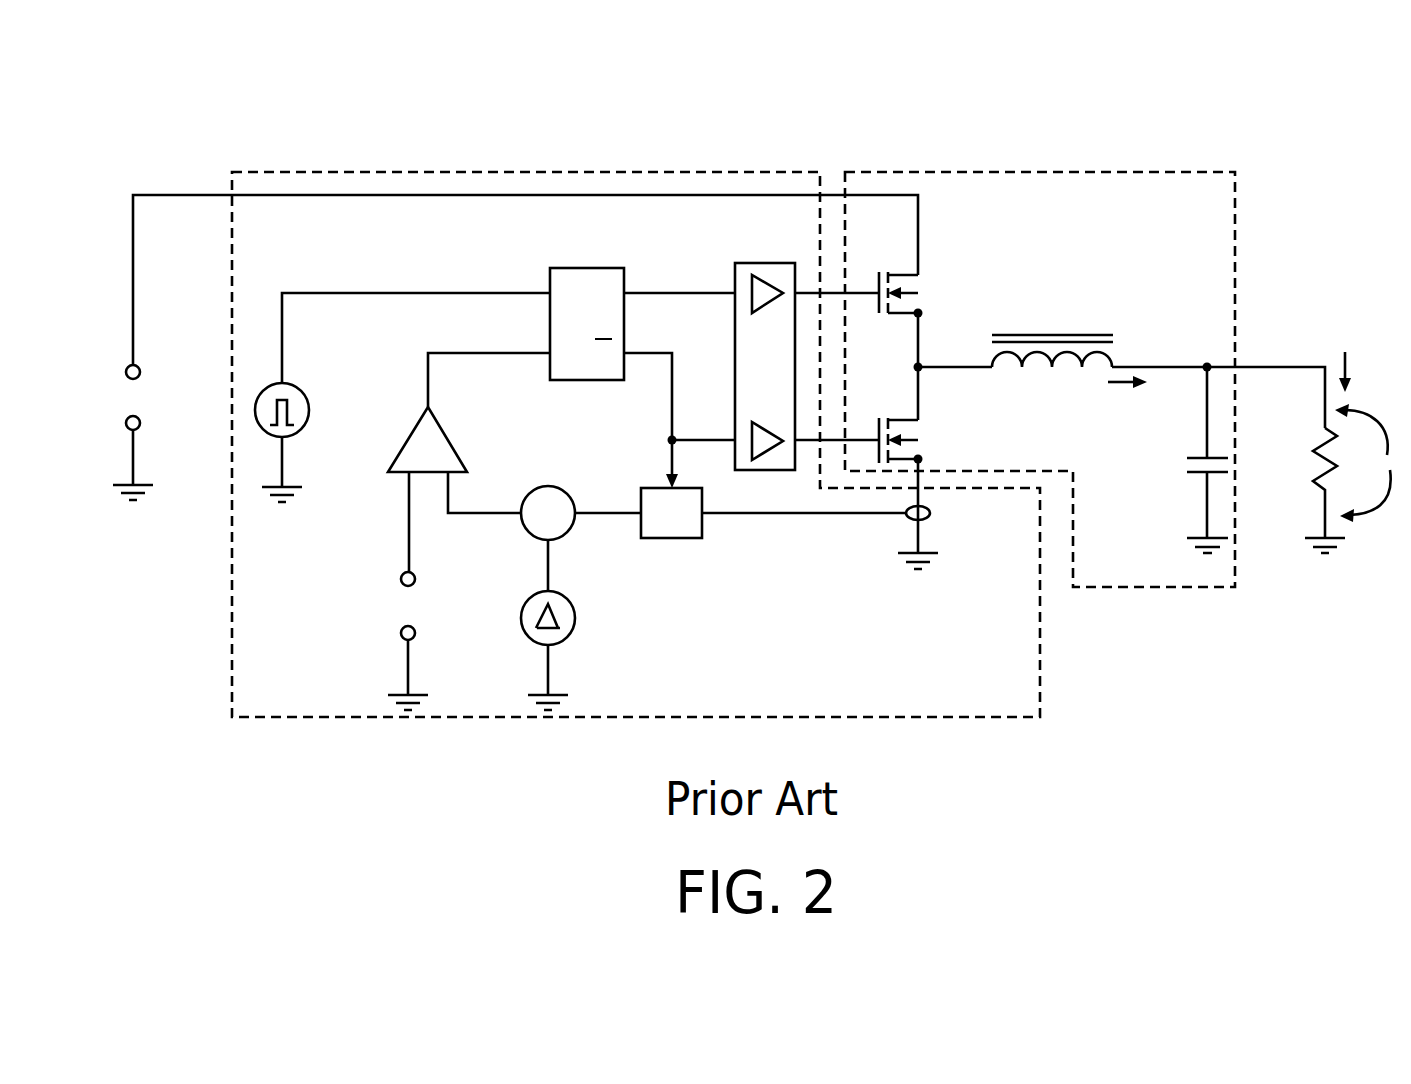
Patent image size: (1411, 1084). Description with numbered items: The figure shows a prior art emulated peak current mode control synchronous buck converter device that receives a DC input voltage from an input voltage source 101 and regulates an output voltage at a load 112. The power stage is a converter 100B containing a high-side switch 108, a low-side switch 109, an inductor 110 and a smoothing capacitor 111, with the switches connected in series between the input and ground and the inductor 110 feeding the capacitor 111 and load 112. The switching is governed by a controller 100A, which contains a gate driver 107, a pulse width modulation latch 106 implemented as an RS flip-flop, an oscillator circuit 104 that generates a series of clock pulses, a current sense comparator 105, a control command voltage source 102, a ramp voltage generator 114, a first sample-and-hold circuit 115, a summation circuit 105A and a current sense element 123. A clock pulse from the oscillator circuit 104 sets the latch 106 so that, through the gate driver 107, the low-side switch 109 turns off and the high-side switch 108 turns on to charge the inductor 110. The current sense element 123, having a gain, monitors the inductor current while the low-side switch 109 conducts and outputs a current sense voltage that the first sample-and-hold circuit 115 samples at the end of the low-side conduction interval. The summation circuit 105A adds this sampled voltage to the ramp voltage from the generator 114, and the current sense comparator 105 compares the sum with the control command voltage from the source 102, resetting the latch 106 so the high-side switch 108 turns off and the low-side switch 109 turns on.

The controller 100A is at (258, 170).
The converter 100B is at (905, 170).
The input voltage source 101 is at (126, 370).
The current control command voltage source 102 is at (400, 580).
The oscillator circuit 104 is at (266, 434).
The current sense comparator 105 is at (455, 445).
The summation circuit 105A is at (525, 527).
The pulse width modulation latch 106 is at (590, 380).
The gate driver 107 is at (733, 276).
The high-side switch 108 is at (925, 293).
The low-side switch 109 is at (925, 439).
The inductor 110 is at (1100, 335).
The smoothing capacitor 111 is at (1183, 465).
The load 112 is at (1313, 460).
The ramp voltage generator 114 is at (575, 605).
The first sample-and-hold circuit 115 is at (702, 538).
The current sense element 123 is at (930, 513).